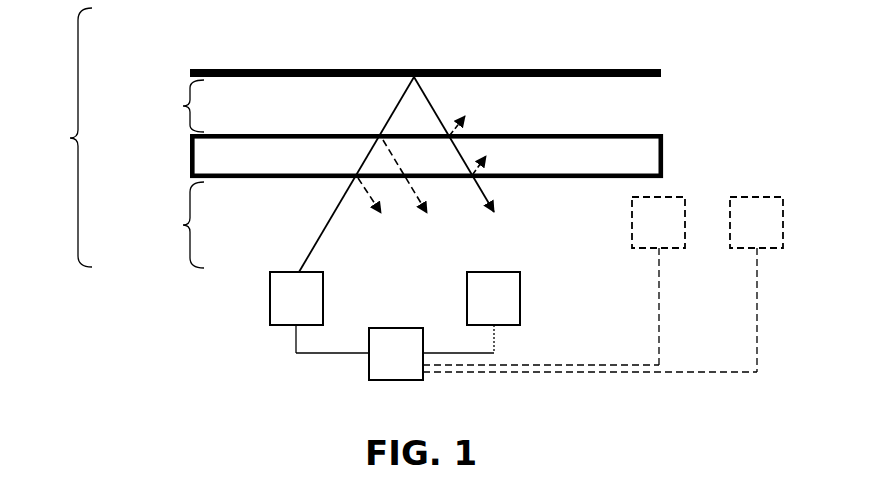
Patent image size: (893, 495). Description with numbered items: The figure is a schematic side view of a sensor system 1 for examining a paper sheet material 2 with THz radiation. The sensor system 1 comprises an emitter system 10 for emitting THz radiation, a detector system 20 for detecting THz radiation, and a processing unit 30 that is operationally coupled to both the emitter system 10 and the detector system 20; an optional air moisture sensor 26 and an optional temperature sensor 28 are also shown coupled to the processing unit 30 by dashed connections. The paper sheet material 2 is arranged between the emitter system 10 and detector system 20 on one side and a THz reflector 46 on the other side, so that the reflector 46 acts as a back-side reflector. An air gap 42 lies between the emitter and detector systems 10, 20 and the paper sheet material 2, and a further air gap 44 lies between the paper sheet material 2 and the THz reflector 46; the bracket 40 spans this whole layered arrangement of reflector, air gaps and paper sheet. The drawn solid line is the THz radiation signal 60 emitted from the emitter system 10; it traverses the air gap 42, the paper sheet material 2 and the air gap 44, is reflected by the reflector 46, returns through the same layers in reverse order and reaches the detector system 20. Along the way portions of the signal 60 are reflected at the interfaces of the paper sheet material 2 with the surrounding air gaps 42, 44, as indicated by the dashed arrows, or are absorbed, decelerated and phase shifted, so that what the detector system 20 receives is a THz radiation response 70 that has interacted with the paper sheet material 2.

The sensor system 1 is at (214, 325).
The paper sheet material 2 is at (228, 170).
The emitter system 10 is at (285, 316).
The detector system 20 is at (482, 316).
The air moisture sensor 26 is at (647, 238).
The temperature sensor 28 is at (745, 238).
The processing unit 30 is at (385, 370).
The layer stack 40 is at (70, 138).
The air gap 42 is at (183, 225).
The air gap 44 is at (183, 106).
The THz reflector 46 is at (210, 69).
The THz radiation signal 60 is at (316, 240).
The THz radiation response 70 is at (547, 217).